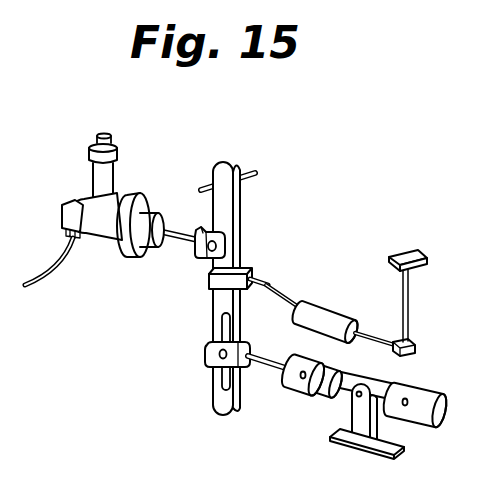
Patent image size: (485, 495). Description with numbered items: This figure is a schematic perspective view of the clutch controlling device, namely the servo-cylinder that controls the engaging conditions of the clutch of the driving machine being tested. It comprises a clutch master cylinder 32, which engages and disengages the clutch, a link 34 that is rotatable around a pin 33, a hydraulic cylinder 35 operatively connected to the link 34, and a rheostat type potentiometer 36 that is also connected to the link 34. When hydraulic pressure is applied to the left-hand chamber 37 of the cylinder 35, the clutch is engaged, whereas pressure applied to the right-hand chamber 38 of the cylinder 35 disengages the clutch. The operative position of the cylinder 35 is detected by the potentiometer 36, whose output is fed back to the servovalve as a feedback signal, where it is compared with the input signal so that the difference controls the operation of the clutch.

The clutch master cylinder 32 is at (116, 205).
The pin 33 is at (252, 173).
The link 34 is at (228, 215).
The hydraulic cylinder 35 is at (340, 392).
The rheostat type potentiometer 36 is at (328, 320).
The left-hand chamber 37 is at (303, 379).
The right-hand chamber 38 is at (407, 402).